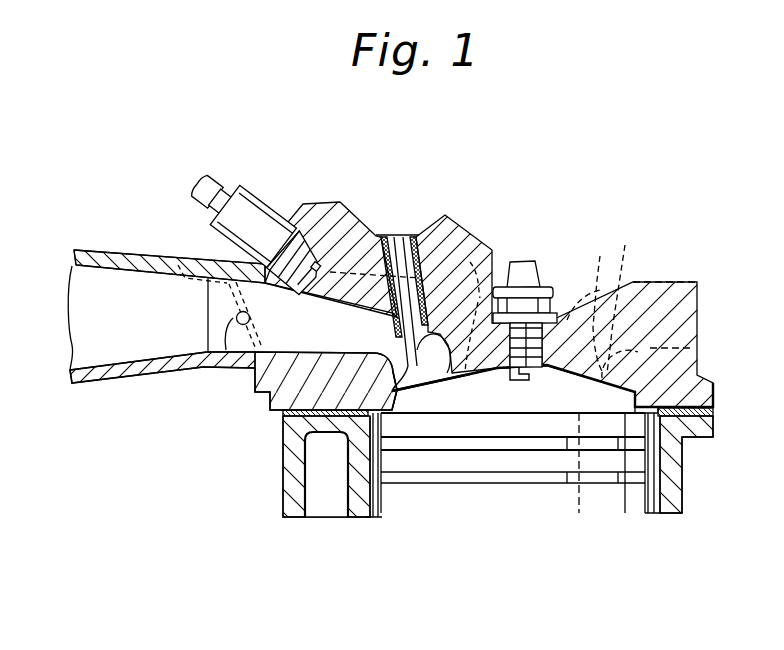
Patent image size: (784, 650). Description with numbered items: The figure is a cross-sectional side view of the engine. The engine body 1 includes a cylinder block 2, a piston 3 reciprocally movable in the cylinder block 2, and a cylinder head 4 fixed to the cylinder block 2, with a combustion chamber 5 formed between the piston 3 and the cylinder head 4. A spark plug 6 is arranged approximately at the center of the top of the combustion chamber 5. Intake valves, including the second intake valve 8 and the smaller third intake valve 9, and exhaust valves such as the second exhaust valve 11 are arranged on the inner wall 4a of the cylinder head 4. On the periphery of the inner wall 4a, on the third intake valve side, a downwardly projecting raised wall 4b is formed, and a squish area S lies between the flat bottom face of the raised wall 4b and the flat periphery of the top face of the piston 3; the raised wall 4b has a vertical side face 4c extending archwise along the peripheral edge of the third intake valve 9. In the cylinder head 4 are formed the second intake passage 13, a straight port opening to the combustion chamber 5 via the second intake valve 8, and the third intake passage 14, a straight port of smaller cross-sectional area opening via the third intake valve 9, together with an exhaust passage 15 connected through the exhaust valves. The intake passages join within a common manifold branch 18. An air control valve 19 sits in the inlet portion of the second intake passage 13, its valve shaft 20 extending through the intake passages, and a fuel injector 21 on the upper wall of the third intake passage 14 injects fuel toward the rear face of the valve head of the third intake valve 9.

The engine body 1 is at (687, 465).
The cylinder block 2 is at (670, 500).
The piston 3 is at (568, 490).
The cylinder head 4 is at (716, 392).
The inner wall of the cylinder head 4a is at (476, 376).
The raised wall 4b is at (385, 406).
The vertical side face 4c is at (400, 398).
The combustion chamber 5 is at (528, 414).
The spark plug 6 is at (534, 270).
The second intake valve 8 is at (453, 262).
The third intake valve 9 is at (424, 240).
The second exhaust valve 11 is at (600, 256).
The second intake passage 13 is at (478, 302).
The third intake passage 14 is at (338, 331).
The exhaust passage 15 is at (686, 283).
The manifold branch 18 is at (150, 368).
The air control valve 19 is at (176, 258).
The valve shaft 20 is at (232, 366).
The fuel injector 21 is at (256, 210).
The squish area S is at (380, 417).